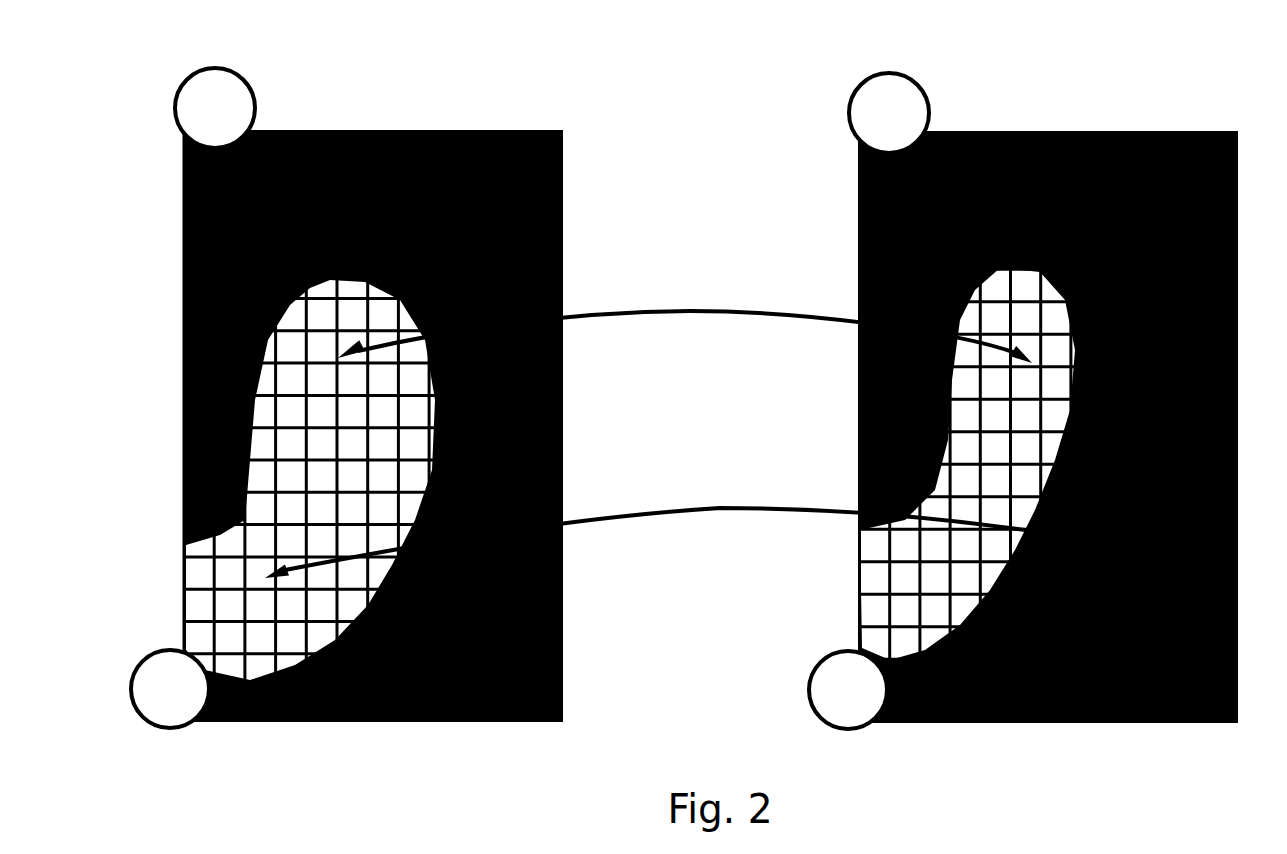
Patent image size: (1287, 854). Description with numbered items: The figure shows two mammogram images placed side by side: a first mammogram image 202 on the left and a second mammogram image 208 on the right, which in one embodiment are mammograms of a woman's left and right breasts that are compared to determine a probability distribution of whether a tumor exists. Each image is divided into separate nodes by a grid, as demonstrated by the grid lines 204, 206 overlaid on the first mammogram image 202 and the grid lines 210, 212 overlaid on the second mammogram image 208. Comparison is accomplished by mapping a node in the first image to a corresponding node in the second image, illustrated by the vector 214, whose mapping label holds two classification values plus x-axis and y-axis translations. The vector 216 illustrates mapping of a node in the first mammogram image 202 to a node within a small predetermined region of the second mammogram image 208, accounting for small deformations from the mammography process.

The first mammogram image 202 is at (533, 110).
The grid lines 204 is at (215, 108).
The grid lines 206 is at (170, 689).
The second mammogram image 208 is at (1210, 112).
The grid lines 210 is at (889, 113).
The grid lines 212 is at (848, 690).
The vector 214 is at (693, 311).
The vector 216 is at (731, 508).